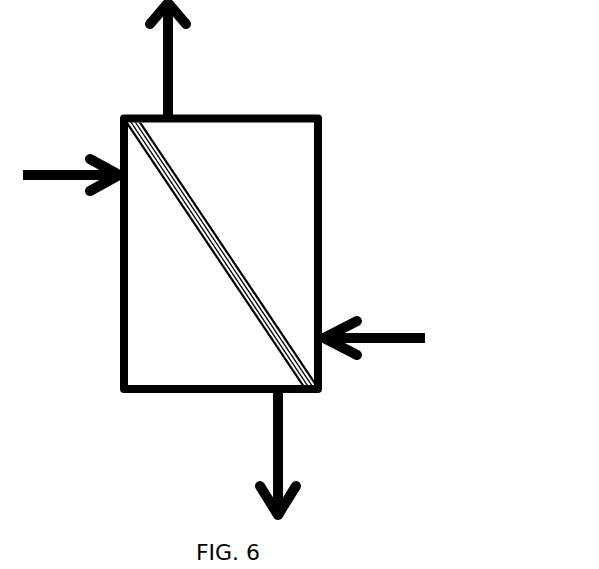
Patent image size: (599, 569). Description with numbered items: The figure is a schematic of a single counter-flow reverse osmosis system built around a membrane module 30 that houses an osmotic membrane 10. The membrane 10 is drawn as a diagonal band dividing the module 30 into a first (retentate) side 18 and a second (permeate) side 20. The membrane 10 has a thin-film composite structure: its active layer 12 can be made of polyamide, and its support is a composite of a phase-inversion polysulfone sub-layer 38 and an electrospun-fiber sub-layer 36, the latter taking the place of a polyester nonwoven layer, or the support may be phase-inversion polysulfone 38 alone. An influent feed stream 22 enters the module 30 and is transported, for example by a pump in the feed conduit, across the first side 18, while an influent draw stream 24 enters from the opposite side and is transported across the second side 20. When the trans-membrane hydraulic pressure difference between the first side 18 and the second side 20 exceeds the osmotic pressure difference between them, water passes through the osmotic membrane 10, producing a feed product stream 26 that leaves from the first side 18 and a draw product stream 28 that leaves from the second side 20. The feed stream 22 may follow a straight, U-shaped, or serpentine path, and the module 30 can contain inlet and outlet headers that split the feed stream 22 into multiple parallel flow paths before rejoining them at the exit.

The membrane module 30 is at (96, 80).
The osmotic membrane 10 is at (263, 302).
The active layer 12 is at (200, 233).
The electrospun-fiber sub-layer 36 is at (192, 221).
The phase-inversion sub-layer 38 is at (184, 205).
The first (retentate) side 18 is at (179, 343).
The second (permeate) side 20 is at (244, 181).
The influent feed stream 22 is at (50, 172).
The influent draw stream 24 is at (397, 333).
The feed product stream 26 is at (273, 457).
The draw product stream 28 is at (173, 50).